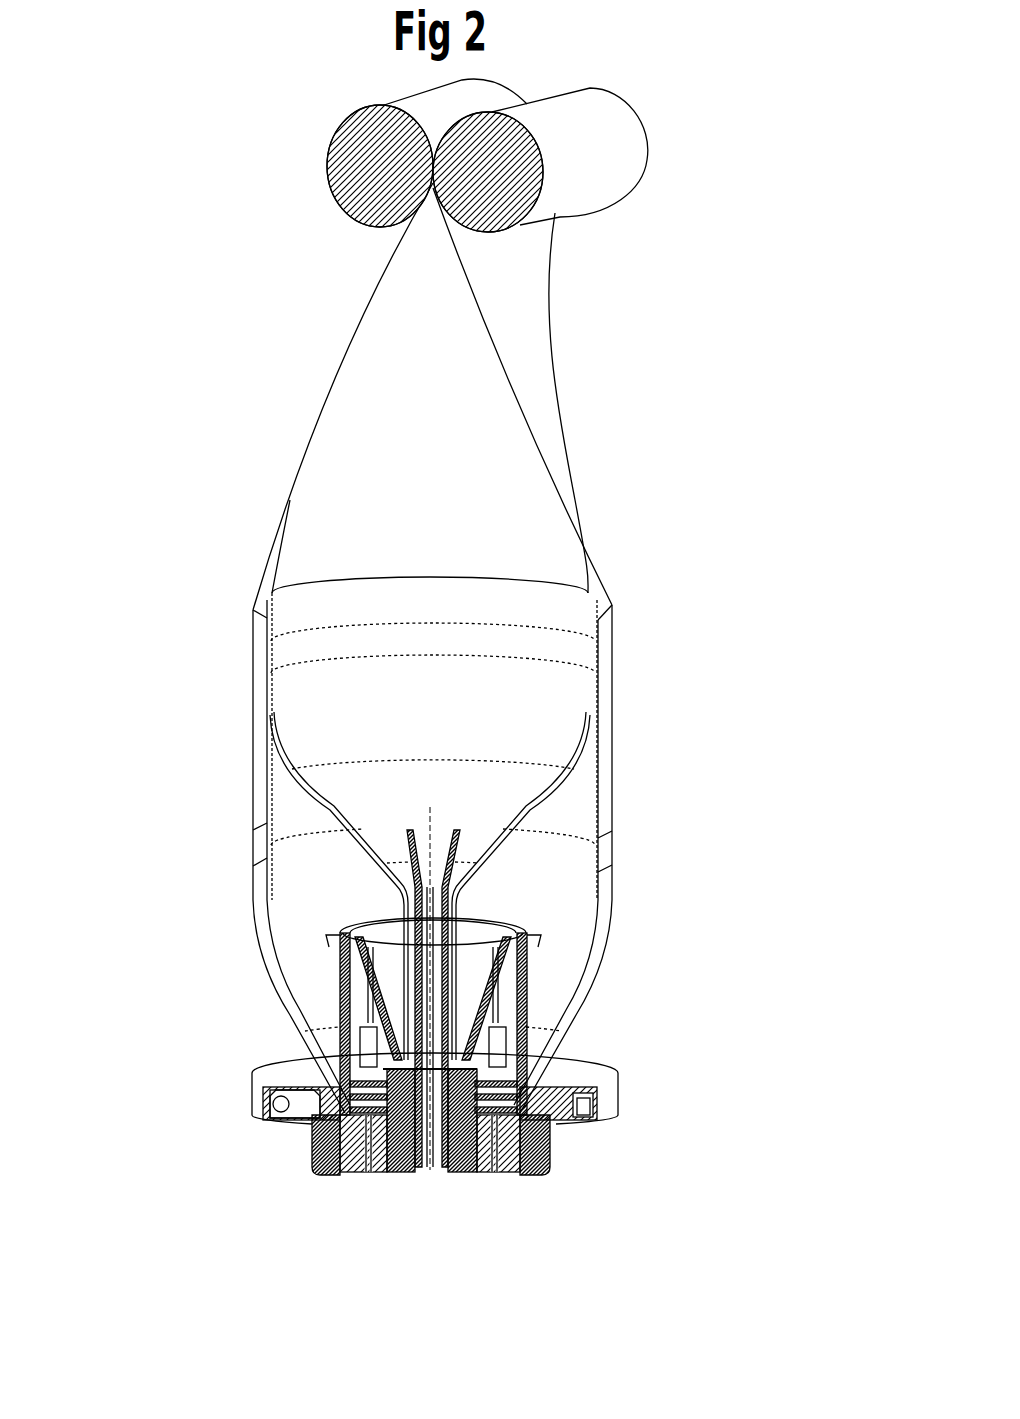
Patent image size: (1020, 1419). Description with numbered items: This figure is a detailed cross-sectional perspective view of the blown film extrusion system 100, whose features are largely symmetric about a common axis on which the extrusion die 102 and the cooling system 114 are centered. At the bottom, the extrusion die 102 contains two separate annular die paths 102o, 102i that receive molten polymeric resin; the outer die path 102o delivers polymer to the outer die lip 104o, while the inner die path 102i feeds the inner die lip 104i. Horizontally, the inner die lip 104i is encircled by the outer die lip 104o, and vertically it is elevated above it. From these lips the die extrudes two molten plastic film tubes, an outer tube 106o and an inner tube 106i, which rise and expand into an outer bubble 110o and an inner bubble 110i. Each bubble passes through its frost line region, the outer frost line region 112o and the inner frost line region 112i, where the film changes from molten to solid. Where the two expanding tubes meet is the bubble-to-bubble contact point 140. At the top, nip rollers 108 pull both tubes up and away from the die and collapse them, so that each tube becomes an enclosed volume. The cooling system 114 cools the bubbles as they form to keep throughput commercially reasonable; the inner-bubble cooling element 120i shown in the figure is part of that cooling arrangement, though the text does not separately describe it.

The blown film extrusion system 100 is at (262, 357).
The nip rollers 108 is at (463, 97).
The inner frost line region 112i is at (273, 652).
The outer frost line region 112o is at (252, 837).
The bubble-to-bubble contact point 140 is at (270, 697).
The inner bubble 110i is at (540, 741).
The outer bubble 110o is at (570, 893).
The inner tube 106i is at (309, 790).
The outer tube 106o is at (594, 943).
The inner nozzle 120i is at (440, 840).
The cooling system 114 is at (235, 983).
The extrusion die 102 is at (242, 1192).
The outer die lip 104o is at (340, 1120).
The outer die path 102o is at (341, 1178).
The inner die lip 104i is at (383, 1133).
The inner die path 102i is at (410, 1176).